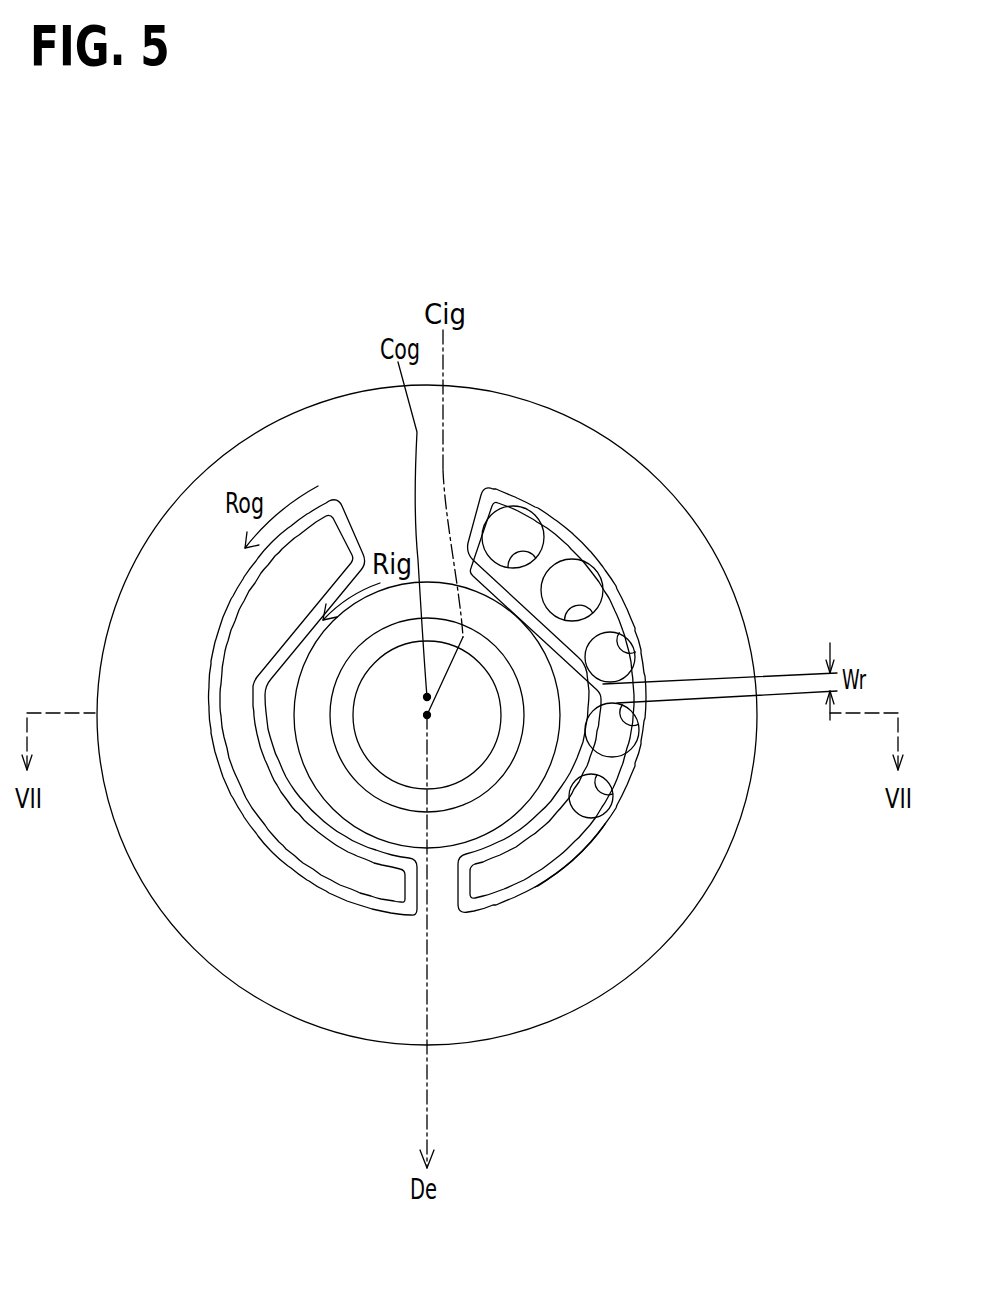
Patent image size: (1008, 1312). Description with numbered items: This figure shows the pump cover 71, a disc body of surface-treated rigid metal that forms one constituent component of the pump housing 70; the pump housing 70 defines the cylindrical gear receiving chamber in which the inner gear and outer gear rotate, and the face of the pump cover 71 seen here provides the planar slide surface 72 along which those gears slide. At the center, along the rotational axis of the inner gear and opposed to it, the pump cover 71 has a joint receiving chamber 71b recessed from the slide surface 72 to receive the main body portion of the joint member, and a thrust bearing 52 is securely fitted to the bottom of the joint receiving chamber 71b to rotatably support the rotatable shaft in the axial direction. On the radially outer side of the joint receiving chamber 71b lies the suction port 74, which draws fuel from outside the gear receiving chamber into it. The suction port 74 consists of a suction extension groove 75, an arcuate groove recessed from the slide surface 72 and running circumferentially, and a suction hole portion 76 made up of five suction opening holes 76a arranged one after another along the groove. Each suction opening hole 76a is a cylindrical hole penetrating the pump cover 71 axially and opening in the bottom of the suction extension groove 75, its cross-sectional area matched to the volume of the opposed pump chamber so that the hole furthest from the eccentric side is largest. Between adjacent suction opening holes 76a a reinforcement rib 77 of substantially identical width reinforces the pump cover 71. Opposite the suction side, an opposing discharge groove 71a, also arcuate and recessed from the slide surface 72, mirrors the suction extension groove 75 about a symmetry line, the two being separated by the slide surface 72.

The pump housing 70 is at (226, 452).
The pump cover 71 is at (427, 715).
The opposing discharge groove 71a is at (242, 642).
The joint receiving chamber 71b is at (340, 810).
The thrust bearing 52 is at (330, 738).
The slide surface 72 is at (395, 923).
The suction port 74 is at (549, 887).
The suction extension groove 75 is at (503, 902).
The suction hole portion 76 is at (653, 615).
The suction opening hole 76a is at (640, 624).
The reinforcement rib 77 is at (520, 548).